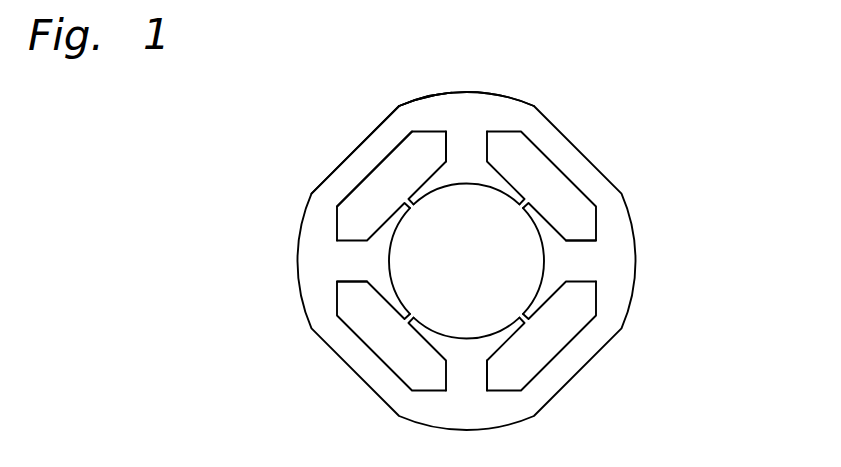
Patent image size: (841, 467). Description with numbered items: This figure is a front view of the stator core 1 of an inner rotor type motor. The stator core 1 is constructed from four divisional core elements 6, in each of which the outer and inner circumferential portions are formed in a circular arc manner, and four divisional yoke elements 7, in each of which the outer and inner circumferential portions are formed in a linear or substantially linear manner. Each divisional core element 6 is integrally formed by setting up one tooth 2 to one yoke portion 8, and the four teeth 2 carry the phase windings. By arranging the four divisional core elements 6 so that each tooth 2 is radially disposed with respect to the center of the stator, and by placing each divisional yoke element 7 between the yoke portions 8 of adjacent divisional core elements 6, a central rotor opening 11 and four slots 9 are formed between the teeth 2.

The stator core 1 is at (530, 261).
The tooth 2 is at (467, 119).
The divisional core element 6 is at (501, 76).
The divisional yoke element 7 is at (341, 154).
The yoke portion 8 is at (407, 86).
The slot 9 is at (580, 185).
The rotor opening 11 is at (541, 293).